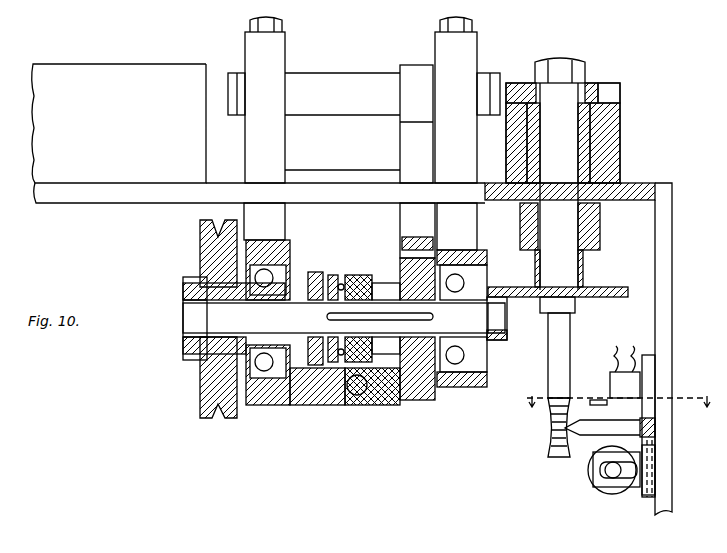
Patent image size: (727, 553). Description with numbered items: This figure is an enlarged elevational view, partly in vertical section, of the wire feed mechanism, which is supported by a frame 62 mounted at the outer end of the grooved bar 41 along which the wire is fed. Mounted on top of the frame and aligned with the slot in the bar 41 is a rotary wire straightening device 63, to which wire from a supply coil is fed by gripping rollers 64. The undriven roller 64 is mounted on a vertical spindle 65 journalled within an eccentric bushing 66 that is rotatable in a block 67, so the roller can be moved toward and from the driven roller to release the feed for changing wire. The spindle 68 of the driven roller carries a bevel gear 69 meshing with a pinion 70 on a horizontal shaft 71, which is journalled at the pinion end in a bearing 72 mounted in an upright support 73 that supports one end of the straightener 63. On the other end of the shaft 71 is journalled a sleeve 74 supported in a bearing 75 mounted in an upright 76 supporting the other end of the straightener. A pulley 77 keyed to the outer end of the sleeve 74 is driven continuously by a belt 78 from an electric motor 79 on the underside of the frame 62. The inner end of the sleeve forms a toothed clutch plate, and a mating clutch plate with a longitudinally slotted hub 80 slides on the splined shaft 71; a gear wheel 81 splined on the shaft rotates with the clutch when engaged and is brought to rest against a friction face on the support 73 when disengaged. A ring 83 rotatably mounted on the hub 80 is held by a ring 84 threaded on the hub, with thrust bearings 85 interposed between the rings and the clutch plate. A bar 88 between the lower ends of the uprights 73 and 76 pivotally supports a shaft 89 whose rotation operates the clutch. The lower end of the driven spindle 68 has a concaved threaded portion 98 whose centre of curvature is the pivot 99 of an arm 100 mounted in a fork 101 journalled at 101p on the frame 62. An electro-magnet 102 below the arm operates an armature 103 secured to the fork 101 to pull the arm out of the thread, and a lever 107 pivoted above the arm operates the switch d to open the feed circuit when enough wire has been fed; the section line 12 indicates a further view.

The bar 41 is at (128, 190).
The frame 62 is at (655, 183).
The rotary wire straightening device 63 is at (350, 87).
The gripping roller 64 is at (595, 83).
The vertical spindle 65 is at (595, 165).
The eccentric bushing 66 is at (622, 120).
The block 67 is at (622, 98).
The spindle of the driven roller 68 is at (548, 368).
The bevel gear 69 is at (610, 298).
The pinion 70 is at (503, 335).
The horizontal shaft 71 is at (192, 358).
The bearing 72 is at (485, 385).
The upright support 73 is at (477, 235).
The sleeve 74 is at (296, 280).
The bearing 75 is at (282, 250).
The upright 76 is at (275, 143).
The pulley 77 is at (203, 400).
The belt 78 is at (330, 275).
The electric motor 79 is at (350, 275).
The slotted hub 80 is at (374, 290).
The gear wheel 81 is at (420, 400).
The ring 83 is at (362, 275).
The ring 84 is at (372, 396).
The thrust bearing 85 is at (316, 404).
The bar 88 is at (296, 398).
The shaft 89 is at (355, 405).
The concaved threaded portion 98 is at (548, 428).
The pivot 99 is at (655, 428).
The arm 100 is at (592, 432).
The fork 101 is at (656, 440).
The journal 101p is at (658, 470).
The electro-magnet 102 is at (606, 494).
The armature 103 is at (628, 480).
The lever 107 is at (606, 400).
The switch d is at (630, 384).
The section line 12- 12 is at (621, 411).